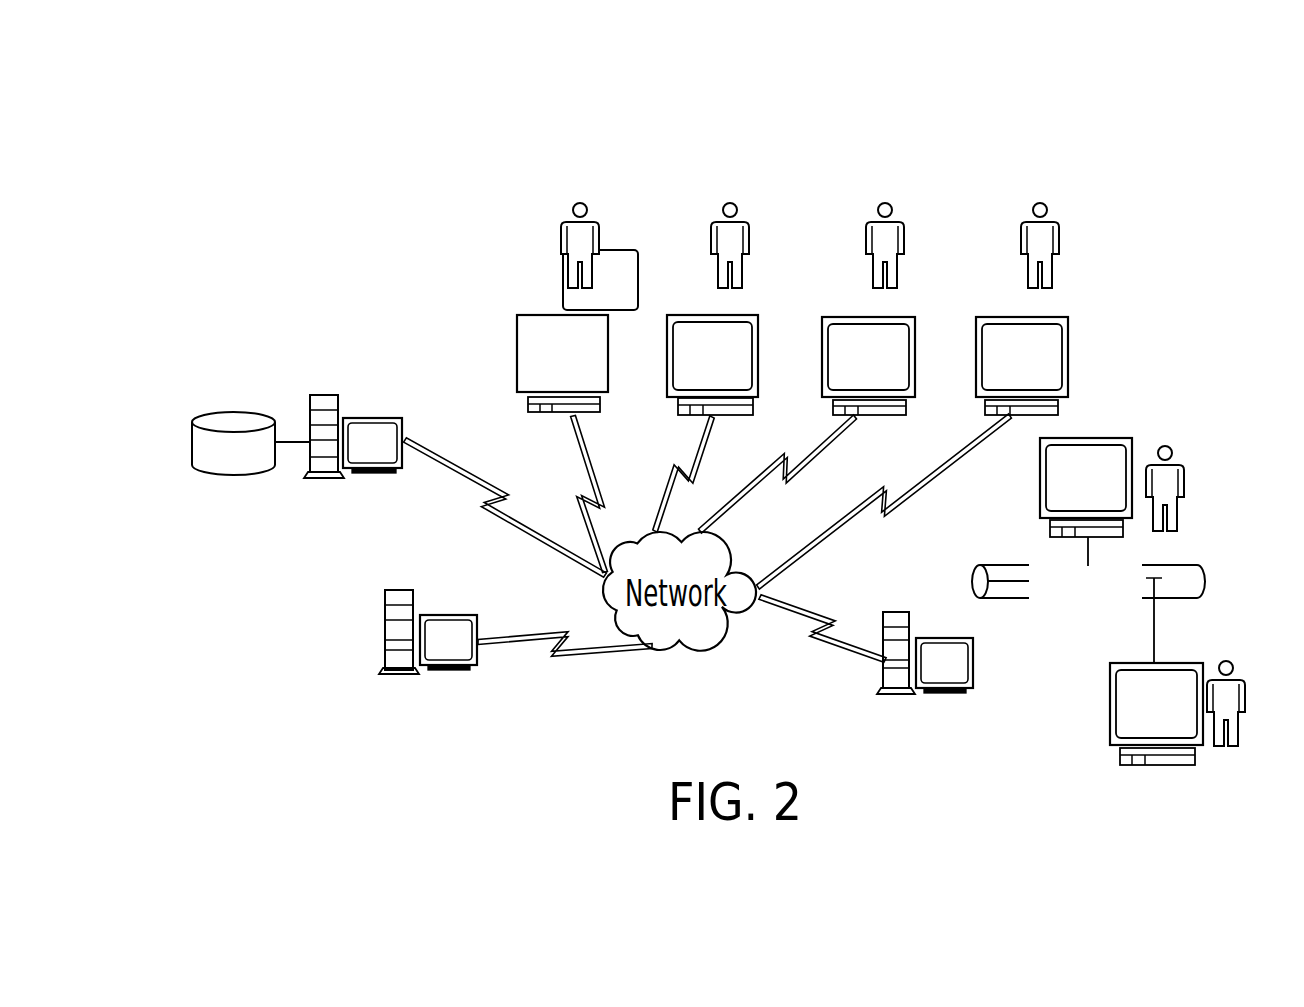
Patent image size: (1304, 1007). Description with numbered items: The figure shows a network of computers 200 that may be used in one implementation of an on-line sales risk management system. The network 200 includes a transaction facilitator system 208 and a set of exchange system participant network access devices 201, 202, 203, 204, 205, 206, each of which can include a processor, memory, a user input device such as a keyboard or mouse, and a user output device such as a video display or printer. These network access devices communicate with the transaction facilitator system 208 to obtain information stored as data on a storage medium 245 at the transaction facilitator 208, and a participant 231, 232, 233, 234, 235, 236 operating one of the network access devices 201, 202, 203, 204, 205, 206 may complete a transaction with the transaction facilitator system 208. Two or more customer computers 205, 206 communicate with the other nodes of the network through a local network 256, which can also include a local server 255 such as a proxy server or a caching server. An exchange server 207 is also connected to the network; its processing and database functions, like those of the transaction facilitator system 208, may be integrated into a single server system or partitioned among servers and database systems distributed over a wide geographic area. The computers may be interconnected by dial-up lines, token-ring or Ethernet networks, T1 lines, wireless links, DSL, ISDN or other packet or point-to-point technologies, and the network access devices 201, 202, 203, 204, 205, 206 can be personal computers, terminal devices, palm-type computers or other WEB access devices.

The network of computers 200 is at (443, 48).
The exchange system participant network access device 201 is at (538, 372).
The exchange system participant network access device 202 is at (736, 373).
The exchange system participant network access device 203 is at (892, 373).
The exchange system participant network access device 204 is at (1044, 373).
The customer computer 205 is at (1060, 498).
The customer computer 206 is at (1181, 723).
The exchange server 207 is at (362, 418).
The transaction facilitator system 208 is at (440, 613).
The participant 231 is at (576, 206).
The participant 232 is at (726, 206).
The participant 233 is at (880, 206).
The participant 234 is at (1034, 206).
The participant 235 is at (1170, 447).
The participant 236 is at (1232, 661).
The storage medium 245 is at (237, 412).
The local server 255 is at (950, 695).
The local network 256 is at (1197, 570).